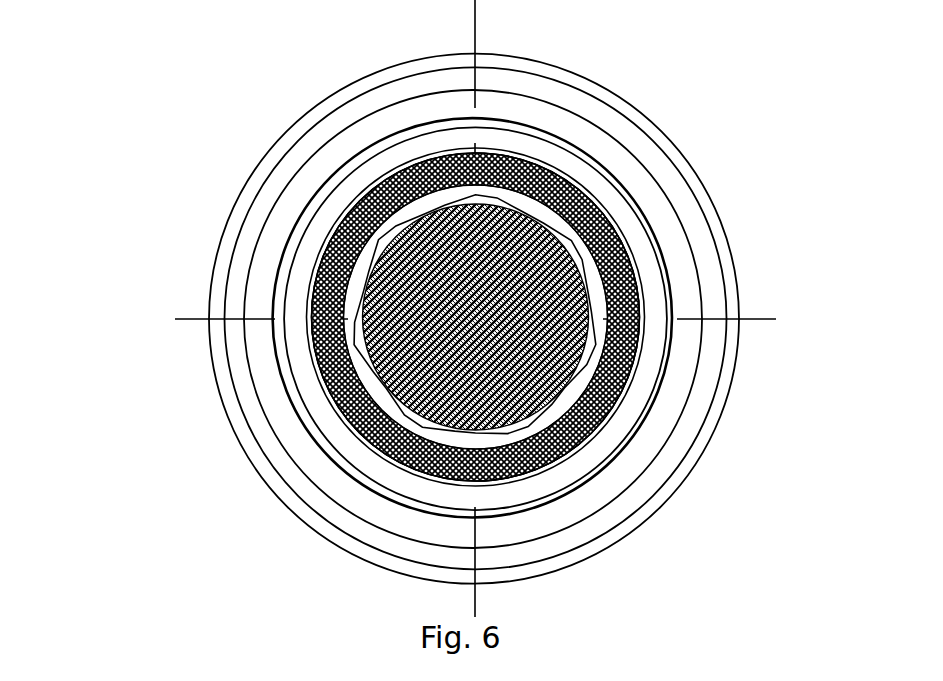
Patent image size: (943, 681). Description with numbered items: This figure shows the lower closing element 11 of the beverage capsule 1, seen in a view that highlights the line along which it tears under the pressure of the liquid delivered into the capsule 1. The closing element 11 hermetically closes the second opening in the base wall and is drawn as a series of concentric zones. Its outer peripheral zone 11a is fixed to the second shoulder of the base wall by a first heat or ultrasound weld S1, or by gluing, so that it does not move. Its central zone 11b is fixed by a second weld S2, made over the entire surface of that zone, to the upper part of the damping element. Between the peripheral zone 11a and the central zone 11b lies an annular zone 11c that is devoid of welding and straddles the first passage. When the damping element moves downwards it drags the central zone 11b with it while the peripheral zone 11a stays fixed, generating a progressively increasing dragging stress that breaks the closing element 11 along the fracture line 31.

The capsule 1 is at (162, 258).
The closing element 11 is at (665, 265).
The peripheral zone 11a is at (618, 227).
The central zone 11b is at (565, 395).
The annular zone 11c is at (592, 382).
The first weld S1 is at (640, 348).
The second weld S2 is at (527, 438).
The fracture line 31 is at (415, 431).